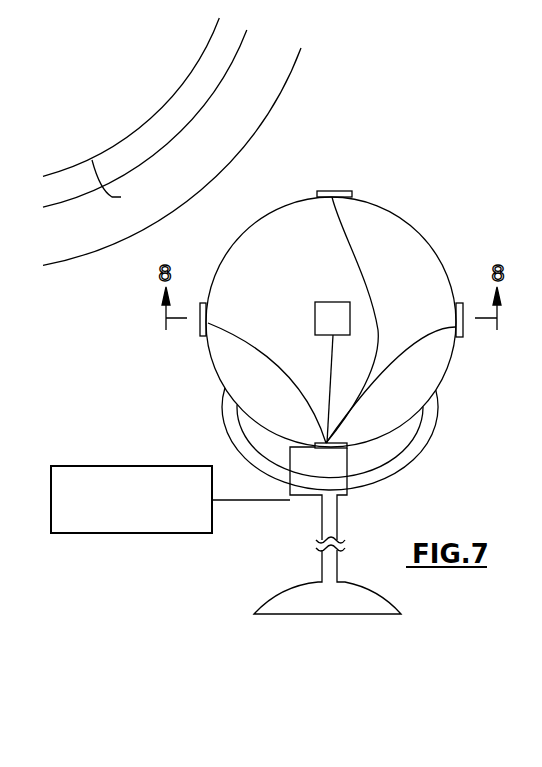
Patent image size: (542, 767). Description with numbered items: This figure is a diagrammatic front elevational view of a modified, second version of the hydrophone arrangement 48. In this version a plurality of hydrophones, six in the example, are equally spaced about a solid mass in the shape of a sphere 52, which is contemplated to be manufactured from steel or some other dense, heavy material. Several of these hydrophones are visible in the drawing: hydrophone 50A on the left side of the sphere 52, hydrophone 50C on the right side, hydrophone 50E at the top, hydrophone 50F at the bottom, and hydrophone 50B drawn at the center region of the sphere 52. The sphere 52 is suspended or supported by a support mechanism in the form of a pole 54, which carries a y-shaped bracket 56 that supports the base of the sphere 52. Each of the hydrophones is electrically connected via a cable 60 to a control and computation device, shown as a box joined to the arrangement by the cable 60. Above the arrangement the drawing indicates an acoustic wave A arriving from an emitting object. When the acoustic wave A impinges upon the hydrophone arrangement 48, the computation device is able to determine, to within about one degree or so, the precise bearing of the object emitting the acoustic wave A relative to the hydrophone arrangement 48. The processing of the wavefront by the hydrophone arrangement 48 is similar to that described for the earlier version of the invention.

The hydrophone arrangement 48 is at (249, 184).
The acoustic wave A is at (182, 205).
The sphere 52 is at (405, 222).
The hydrophone 50A is at (202, 336).
The hydrophone 50B is at (315, 317).
The hydrophone 50C is at (460, 303).
The hydrophone 50E is at (338, 191).
The hydrophone 50F is at (345, 449).
The y-shaped bracket 56 is at (420, 458).
The pole 54 is at (322, 576).
The cable 60 is at (232, 500).